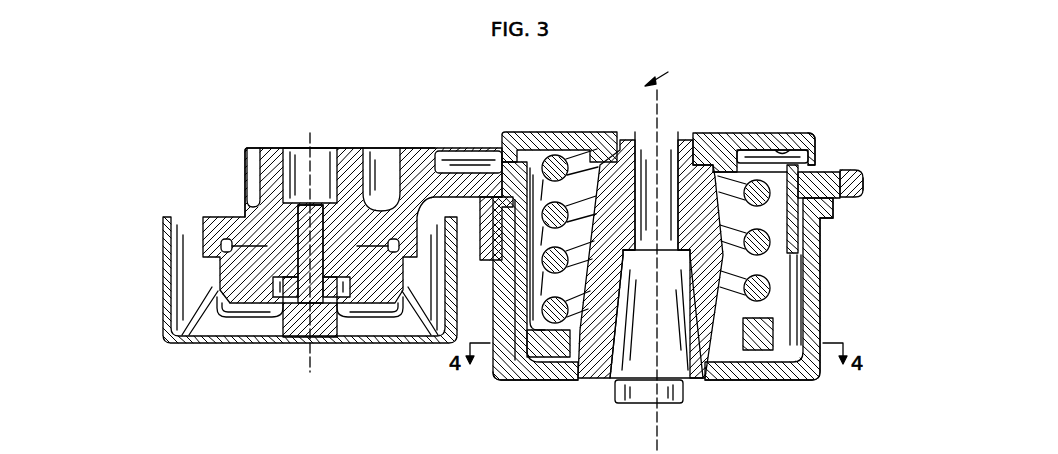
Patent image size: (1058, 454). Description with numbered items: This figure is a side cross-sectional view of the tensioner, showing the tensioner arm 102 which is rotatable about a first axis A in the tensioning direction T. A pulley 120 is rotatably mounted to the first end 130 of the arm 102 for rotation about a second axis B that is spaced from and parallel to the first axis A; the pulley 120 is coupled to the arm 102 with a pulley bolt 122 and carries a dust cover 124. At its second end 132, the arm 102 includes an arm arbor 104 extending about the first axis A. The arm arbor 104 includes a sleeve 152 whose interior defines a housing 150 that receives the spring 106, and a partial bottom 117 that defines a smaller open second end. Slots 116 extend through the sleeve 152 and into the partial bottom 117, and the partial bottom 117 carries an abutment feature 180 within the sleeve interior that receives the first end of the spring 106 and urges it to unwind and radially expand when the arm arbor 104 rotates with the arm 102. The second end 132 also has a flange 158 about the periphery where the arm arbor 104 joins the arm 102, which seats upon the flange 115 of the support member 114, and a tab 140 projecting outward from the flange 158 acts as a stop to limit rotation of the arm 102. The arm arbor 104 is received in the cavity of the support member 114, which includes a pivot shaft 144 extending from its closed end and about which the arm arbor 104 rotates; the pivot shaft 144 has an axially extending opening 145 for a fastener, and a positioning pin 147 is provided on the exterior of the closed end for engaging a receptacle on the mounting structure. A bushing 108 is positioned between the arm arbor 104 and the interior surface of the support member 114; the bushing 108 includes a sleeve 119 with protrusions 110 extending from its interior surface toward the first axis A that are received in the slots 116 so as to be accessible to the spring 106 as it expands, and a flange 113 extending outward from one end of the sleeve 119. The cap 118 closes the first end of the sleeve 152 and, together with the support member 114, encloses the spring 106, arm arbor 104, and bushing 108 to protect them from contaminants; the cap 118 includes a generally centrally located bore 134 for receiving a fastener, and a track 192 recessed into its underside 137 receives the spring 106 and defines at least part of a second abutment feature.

The tensioner arm 102 is at (423, 148).
The arm arbor 104 is at (520, 352).
The spring 106 is at (830, 173).
The bushing 108 is at (503, 350).
The protrusions 110 is at (802, 290).
The flange 113 is at (500, 207).
The support member 114 is at (822, 302).
The flange 115 is at (834, 216).
The slots 116 is at (820, 255).
The partial bottom 117 is at (552, 348).
The cap 118 is at (760, 152).
The sleeve 119 is at (513, 290).
The pulley 120 is at (163, 290).
The pulley bolt 122 is at (305, 335).
The dust cover 124 is at (237, 312).
The first end 130 is at (280, 150).
The second end 132 is at (502, 140).
The bore 134 is at (710, 140).
The underside 137 is at (816, 145).
The tab 140 is at (864, 183).
The pivot shaft 144 is at (610, 165).
The opening 145 is at (647, 160).
The positioning pin 147 is at (617, 392).
The housing 150 is at (530, 183).
The sleeve 152 is at (515, 285).
The flange 158 is at (865, 165).
The abutment feature 180 is at (758, 350).
The track 192 is at (798, 150).
The first axis A is at (665, 128).
The second axis B is at (316, 130).
The tensioning direction T is at (665, 71).